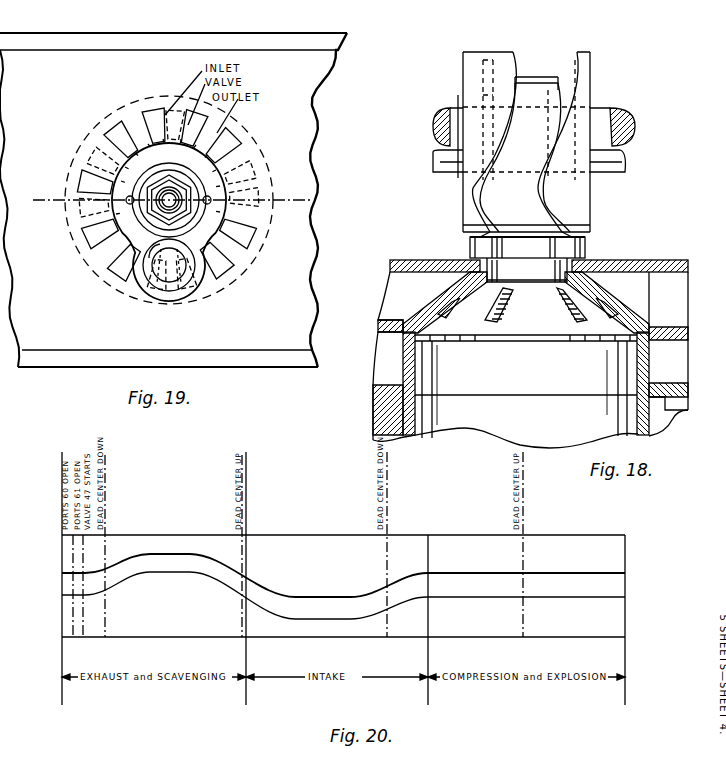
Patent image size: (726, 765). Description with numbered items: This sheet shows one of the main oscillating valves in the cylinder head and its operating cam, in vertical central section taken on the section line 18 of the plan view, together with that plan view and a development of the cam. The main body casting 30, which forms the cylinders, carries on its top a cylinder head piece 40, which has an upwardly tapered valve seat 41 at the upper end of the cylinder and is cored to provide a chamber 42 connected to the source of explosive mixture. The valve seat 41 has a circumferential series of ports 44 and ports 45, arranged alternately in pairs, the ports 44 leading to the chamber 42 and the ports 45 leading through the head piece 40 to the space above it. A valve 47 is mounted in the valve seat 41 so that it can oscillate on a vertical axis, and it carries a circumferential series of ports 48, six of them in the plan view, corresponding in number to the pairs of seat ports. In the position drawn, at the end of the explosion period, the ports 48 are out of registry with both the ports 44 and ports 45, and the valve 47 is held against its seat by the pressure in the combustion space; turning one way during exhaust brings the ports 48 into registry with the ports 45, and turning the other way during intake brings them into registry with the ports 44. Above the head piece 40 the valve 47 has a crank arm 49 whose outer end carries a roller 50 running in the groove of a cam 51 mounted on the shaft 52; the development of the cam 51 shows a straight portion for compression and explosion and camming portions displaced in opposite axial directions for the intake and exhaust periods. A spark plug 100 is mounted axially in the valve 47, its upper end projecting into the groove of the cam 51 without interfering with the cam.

In FIG. 19, the section line 18— 18 is at (181, 201).
In FIG. 18, the main body casting 30 is at (676, 421).
In FIG. 19, the cylinder head piece 40 is at (303, 307).
In FIG. 18, the cylinder head piece 40 is at (432, 262).
In FIG. 18, the valve seat 41 is at (610, 315).
In FIG. 18, the chamber 42 is at (656, 288).
In FIG. 19, the ports 44 is at (113, 158).
In FIG. 19, the ports 45 is at (85, 183).
In FIG. 18, the valve 47 is at (540, 325).
In FIG. 19, the ports 48 is at (130, 143).
In FIG. 18, the ports 48 is at (509, 306).
In FIG. 19, the crank arm 49 is at (229, 226).
In FIG. 18, the crank arm 49 is at (588, 252).
In FIG. 19, the roller 50 is at (198, 276).
In FIG. 18, the roller 50 is at (540, 224).
In FIG. 18, the cam 51 is at (582, 96).
In FIG. 20, the cam 51 is at (343, 586).
In FIG. 18, the shaft 52 is at (626, 140).
In FIG. 19, the spark plug 100 is at (167, 204).